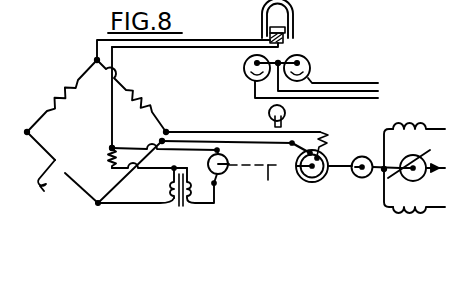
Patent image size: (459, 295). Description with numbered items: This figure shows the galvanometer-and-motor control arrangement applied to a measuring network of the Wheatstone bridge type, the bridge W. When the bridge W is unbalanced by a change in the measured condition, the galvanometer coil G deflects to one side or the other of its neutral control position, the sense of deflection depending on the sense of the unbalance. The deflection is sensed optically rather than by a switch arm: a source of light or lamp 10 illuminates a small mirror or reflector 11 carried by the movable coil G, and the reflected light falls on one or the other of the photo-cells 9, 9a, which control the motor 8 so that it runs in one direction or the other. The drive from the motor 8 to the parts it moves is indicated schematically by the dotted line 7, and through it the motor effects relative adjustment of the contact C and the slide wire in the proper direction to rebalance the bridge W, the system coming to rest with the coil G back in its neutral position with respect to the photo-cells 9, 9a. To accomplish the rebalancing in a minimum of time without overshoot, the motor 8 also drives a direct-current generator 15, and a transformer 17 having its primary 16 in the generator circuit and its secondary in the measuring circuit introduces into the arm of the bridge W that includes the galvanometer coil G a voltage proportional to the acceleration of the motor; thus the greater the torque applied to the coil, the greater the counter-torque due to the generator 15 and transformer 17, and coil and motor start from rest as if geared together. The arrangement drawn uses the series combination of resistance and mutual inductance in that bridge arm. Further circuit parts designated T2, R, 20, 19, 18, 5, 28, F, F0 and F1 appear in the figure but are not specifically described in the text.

The Wheatstone bridge W is at (58, 130).
The junction conductor 20 is at (110, 146).
The resistor R is at (107, 160).
The terminal T2 is at (44, 192).
The junction conductor 19 is at (98, 204).
The transformer primary winding 18 is at (165, 201).
The transformer 17 is at (181, 207).
The primary 16 is at (197, 201).
The direct-current generator 15 is at (226, 172).
The dotted line 7 is at (255, 191).
The contact C is at (290, 151).
The relay 5 is at (310, 182).
The relay 28 is at (356, 177).
The motor 8 is at (389, 177).
The field coil F0 is at (405, 122).
The field coil F1 is at (399, 212).
The electron tube F is at (262, 10).
The galvanometer coil G is at (287, 28).
The mirror or reflector 11 is at (283, 42).
The photo-cell 9 is at (245, 73).
The photo-cell 9a is at (310, 63).
The lamp 10 is at (285, 114).